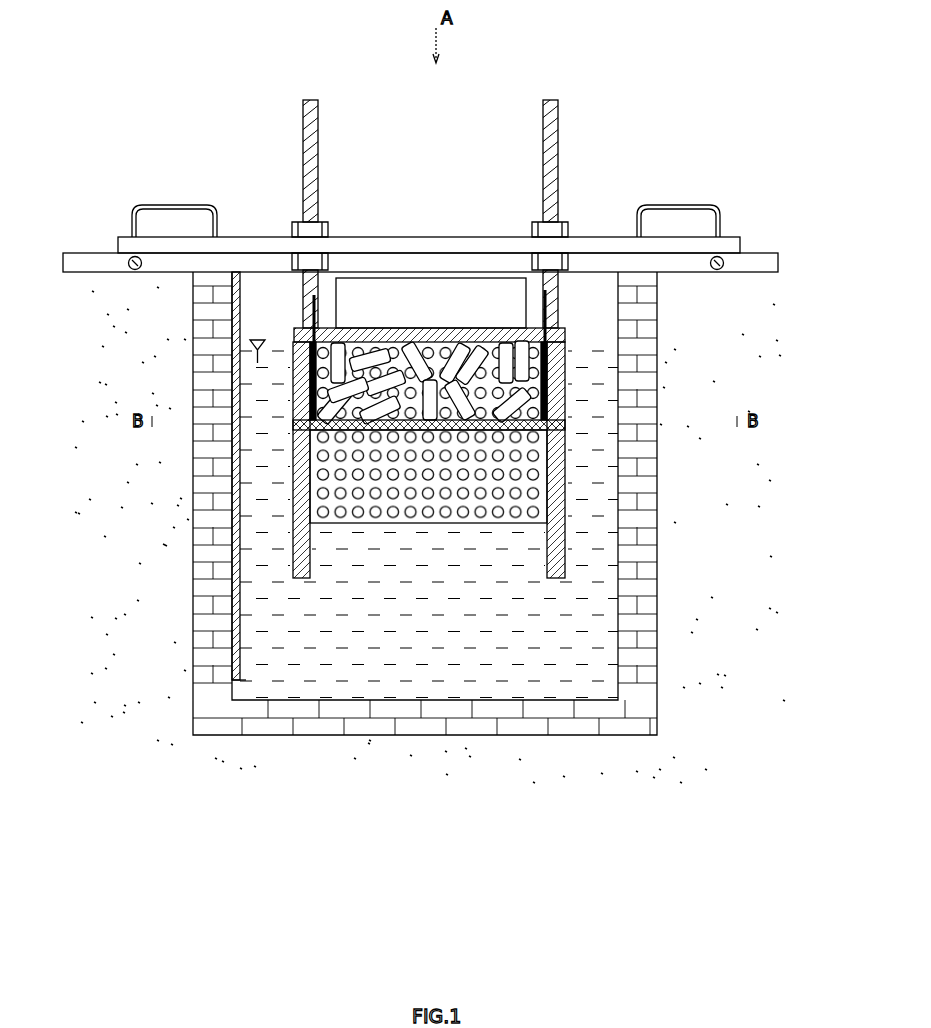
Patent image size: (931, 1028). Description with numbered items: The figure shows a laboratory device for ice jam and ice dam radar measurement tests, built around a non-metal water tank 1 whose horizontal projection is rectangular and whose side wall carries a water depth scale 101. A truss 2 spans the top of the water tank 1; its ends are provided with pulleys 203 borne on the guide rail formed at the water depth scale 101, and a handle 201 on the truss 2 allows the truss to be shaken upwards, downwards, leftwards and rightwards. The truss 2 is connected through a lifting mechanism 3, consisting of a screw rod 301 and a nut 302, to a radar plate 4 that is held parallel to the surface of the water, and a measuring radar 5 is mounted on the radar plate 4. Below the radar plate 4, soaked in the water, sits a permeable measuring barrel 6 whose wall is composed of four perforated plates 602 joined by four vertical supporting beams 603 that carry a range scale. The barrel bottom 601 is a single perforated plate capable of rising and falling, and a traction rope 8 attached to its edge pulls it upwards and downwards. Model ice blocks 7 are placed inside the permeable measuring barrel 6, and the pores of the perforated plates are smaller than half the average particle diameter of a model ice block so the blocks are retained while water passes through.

The water tank 1 is at (637, 622).
The water depth scale 101 is at (230, 487).
The truss 2 is at (728, 238).
The handle 201 is at (690, 208).
The pulley 203 is at (722, 260).
The lifting mechanism 3 is at (436, 193).
The screw rod 301 is at (302, 145).
The nut 302 is at (292, 225).
The radar plate 4 is at (557, 337).
The measuring radar 5 is at (497, 298).
The permeable measuring barrel 6 is at (451, 480).
The barrel bottom 601 is at (548, 424).
The perforated plate 602 is at (546, 491).
The vertical supporting beam 603 is at (556, 531).
The model ice block 7 is at (530, 378).
The traction rope 8 is at (297, 404).